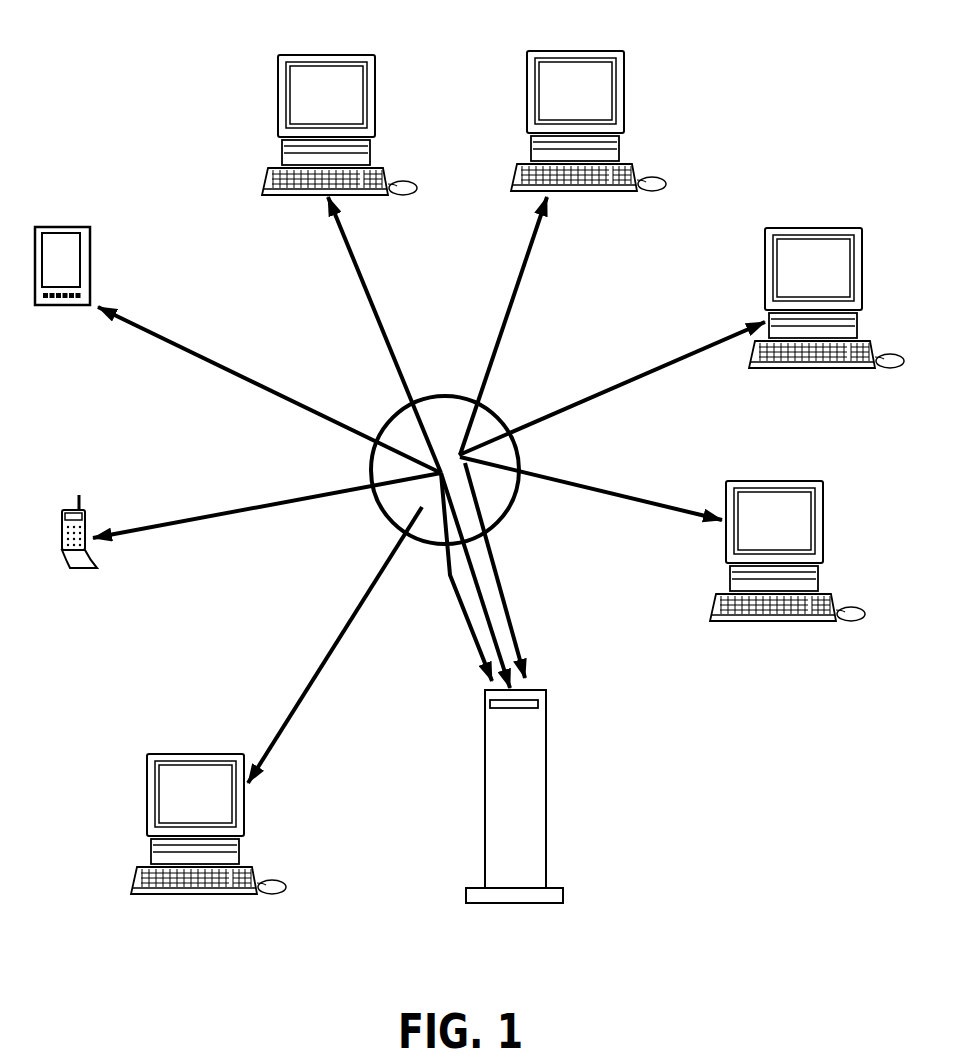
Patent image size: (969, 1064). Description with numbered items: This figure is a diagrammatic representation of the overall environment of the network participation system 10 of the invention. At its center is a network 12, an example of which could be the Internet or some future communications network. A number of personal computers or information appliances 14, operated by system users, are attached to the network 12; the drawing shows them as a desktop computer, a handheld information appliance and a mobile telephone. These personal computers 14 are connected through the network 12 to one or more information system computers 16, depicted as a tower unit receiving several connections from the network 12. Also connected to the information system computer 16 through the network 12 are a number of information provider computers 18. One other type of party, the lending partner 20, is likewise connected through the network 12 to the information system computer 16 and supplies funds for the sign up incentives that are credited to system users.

The system 10 is at (138, 90).
The network 12 is at (437, 408).
The personal computers or information appliances 14 is at (280, 103).
The information system computer 16 is at (545, 807).
The information provider computers 18 is at (625, 122).
The lending partner 20 is at (152, 832).